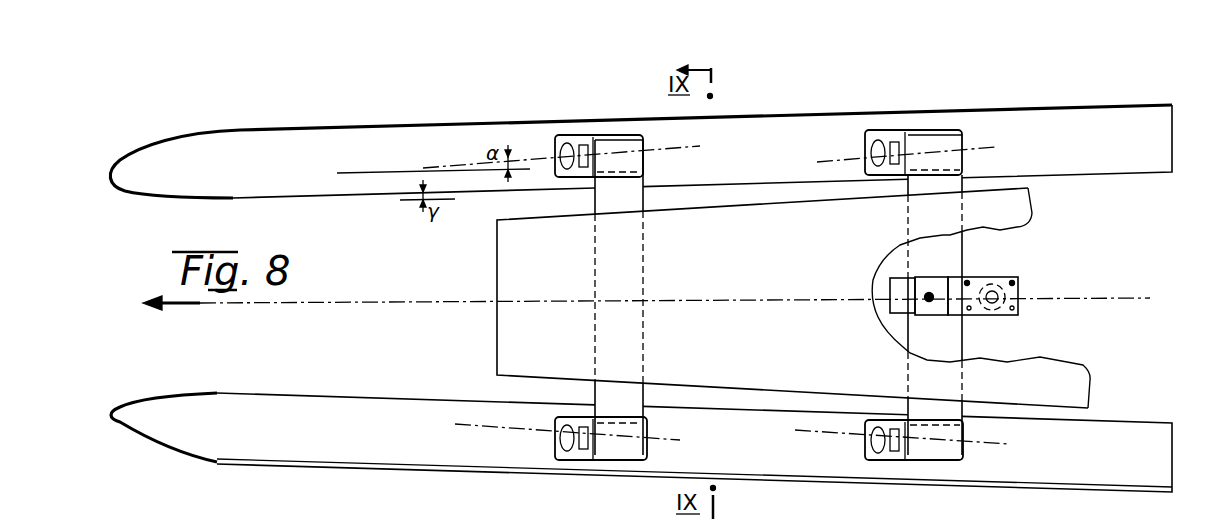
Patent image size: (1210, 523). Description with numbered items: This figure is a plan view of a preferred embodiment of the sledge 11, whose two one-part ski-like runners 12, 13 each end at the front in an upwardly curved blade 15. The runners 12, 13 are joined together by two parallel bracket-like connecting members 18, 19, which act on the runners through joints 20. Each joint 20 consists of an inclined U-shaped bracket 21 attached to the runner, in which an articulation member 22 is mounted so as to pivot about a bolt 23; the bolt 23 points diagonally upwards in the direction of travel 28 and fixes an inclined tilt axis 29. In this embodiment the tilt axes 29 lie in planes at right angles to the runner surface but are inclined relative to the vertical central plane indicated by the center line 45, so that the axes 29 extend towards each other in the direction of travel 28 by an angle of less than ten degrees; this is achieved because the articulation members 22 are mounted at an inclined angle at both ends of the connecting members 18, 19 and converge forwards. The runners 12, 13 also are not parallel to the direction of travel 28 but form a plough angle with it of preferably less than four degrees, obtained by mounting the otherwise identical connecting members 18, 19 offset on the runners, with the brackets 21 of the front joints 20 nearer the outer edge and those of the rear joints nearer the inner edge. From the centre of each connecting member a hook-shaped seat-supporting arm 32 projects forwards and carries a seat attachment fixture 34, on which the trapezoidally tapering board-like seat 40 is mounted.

The sledge 11 is at (290, 110).
The runner 12 is at (327, 447).
The runner 13 is at (237, 141).
The upwardly curved blade 15 is at (133, 165).
The connecting member 18 is at (637, 203).
The connecting member 19 is at (950, 186).
The joint 20 is at (633, 110).
The U-shaped bracket 21 is at (575, 132).
The articulation member 22 is at (608, 132).
The bolt 23 is at (557, 157).
The direction of travel 28 is at (192, 306).
The tilt axis 29 is at (440, 166).
The seat-supporting arm 32 is at (900, 302).
The seat attachment fixture 34 is at (1014, 283).
The seat 40 is at (782, 276).
The center line 45 is at (419, 304).